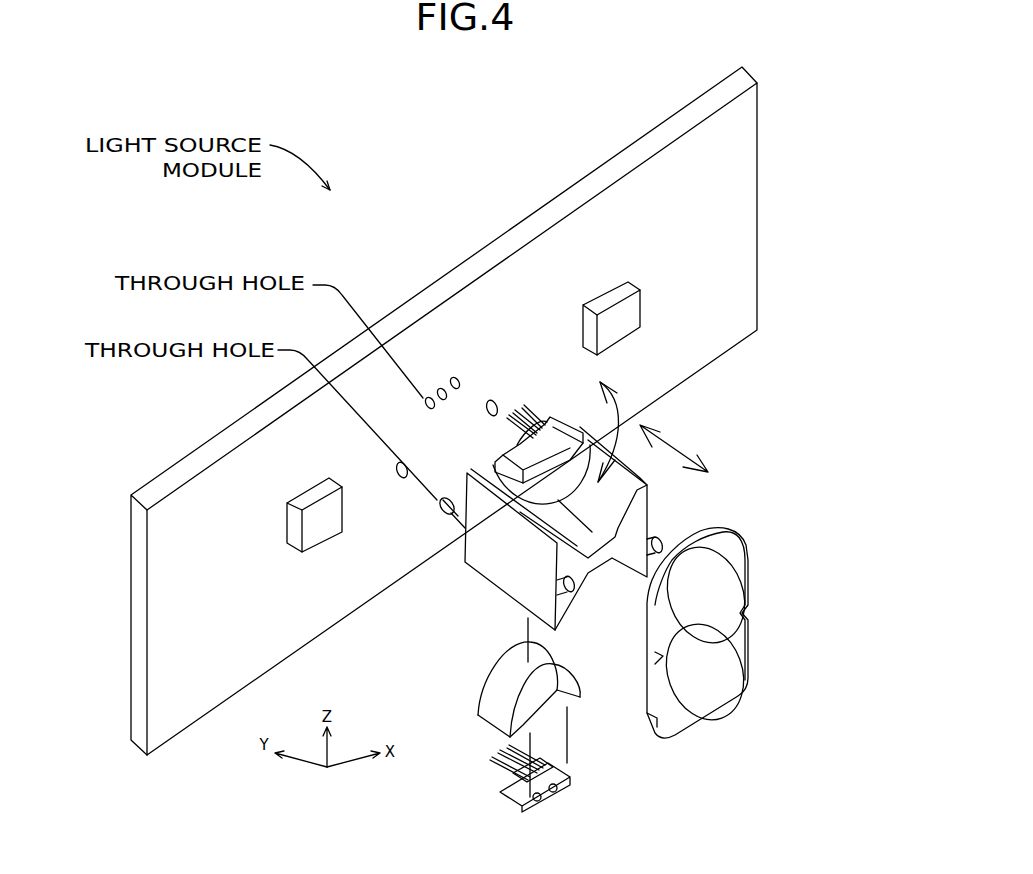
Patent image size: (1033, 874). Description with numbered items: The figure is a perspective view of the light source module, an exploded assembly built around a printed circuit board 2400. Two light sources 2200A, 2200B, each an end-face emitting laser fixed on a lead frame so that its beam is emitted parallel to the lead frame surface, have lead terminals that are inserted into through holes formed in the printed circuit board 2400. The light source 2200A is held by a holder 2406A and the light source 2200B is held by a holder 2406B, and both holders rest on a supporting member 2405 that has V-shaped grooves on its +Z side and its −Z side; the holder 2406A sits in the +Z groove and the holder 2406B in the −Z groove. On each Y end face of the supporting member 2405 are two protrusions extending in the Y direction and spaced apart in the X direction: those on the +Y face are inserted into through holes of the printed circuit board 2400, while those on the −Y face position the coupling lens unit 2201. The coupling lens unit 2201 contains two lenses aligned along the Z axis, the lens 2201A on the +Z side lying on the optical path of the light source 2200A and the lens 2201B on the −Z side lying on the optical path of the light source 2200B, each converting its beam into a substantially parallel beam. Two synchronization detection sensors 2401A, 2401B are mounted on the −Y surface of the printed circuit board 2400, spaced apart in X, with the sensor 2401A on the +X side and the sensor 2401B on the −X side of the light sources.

The printed circuit board 2400 is at (470, 255).
The synchronization detection sensor 2401A is at (615, 282).
The synchronization detection sensor 2401B is at (295, 545).
The supporting member 2405 is at (490, 583).
The holder 2406A is at (502, 457).
The holder 2406B is at (497, 662).
The light source 2200A is at (538, 437).
The light source 2200B is at (530, 807).
The coupling lens unit 2201 is at (720, 528).
The lens 2201A is at (722, 593).
The lens 2201B is at (722, 648).